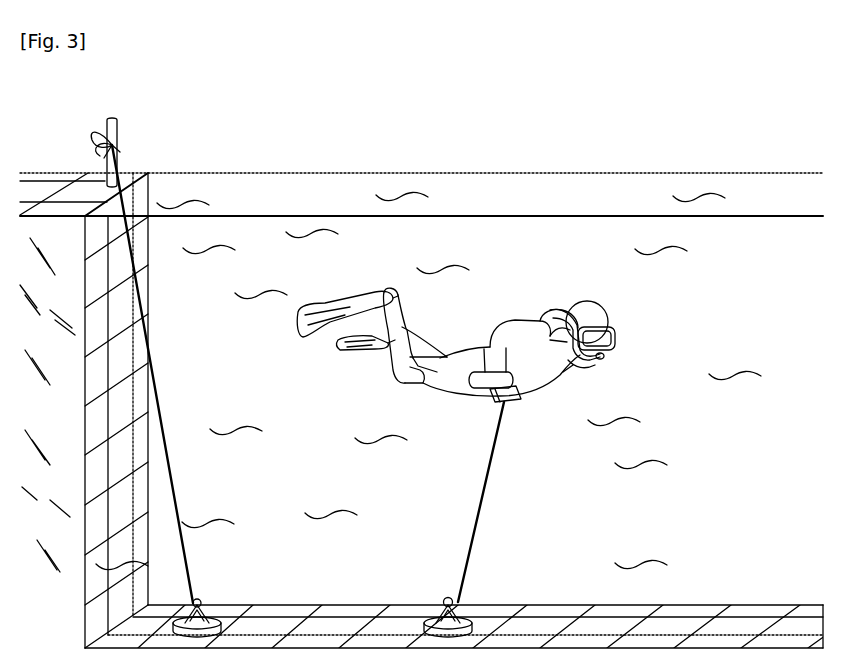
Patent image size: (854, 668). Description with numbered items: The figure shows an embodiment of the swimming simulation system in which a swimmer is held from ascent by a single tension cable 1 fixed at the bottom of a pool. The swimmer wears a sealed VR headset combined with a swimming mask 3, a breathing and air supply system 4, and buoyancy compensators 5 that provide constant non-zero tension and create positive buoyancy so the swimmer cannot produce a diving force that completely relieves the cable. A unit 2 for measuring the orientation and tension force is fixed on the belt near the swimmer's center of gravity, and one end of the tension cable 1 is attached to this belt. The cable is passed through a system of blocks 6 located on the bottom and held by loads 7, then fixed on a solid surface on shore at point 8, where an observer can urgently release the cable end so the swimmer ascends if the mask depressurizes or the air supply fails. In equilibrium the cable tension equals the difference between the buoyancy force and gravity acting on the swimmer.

The tension cable 1 is at (489, 479).
The unit for measuring the orientation and tension force 2 is at (514, 399).
The swimming mask 3 is at (608, 336).
The breathing and air supply system 4 is at (602, 357).
The buoyancy compensators 5 is at (481, 385).
The system of blocks 6 is at (444, 598).
The loads 7 is at (466, 621).
The point on shore 8 is at (120, 143).